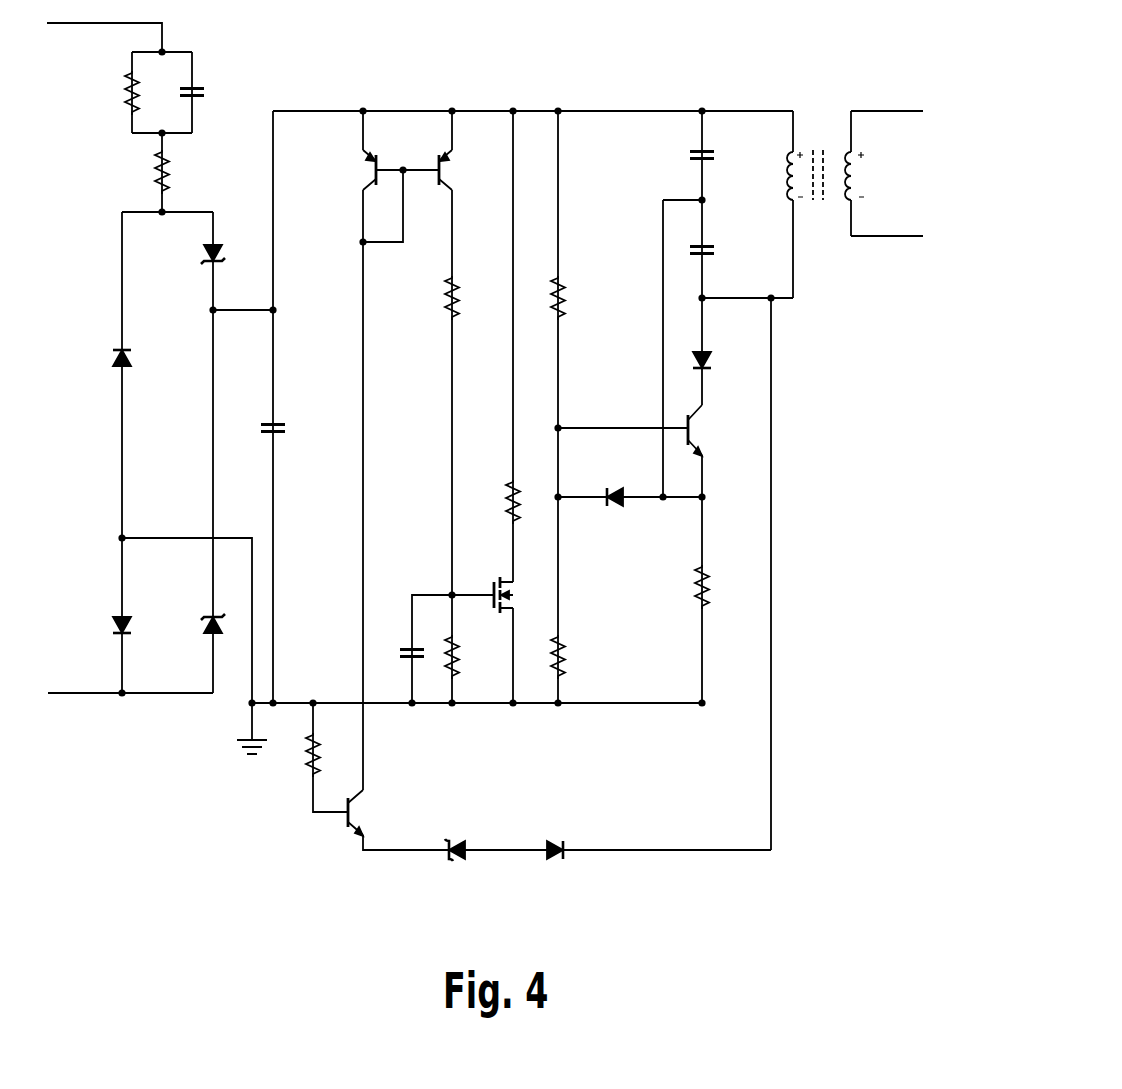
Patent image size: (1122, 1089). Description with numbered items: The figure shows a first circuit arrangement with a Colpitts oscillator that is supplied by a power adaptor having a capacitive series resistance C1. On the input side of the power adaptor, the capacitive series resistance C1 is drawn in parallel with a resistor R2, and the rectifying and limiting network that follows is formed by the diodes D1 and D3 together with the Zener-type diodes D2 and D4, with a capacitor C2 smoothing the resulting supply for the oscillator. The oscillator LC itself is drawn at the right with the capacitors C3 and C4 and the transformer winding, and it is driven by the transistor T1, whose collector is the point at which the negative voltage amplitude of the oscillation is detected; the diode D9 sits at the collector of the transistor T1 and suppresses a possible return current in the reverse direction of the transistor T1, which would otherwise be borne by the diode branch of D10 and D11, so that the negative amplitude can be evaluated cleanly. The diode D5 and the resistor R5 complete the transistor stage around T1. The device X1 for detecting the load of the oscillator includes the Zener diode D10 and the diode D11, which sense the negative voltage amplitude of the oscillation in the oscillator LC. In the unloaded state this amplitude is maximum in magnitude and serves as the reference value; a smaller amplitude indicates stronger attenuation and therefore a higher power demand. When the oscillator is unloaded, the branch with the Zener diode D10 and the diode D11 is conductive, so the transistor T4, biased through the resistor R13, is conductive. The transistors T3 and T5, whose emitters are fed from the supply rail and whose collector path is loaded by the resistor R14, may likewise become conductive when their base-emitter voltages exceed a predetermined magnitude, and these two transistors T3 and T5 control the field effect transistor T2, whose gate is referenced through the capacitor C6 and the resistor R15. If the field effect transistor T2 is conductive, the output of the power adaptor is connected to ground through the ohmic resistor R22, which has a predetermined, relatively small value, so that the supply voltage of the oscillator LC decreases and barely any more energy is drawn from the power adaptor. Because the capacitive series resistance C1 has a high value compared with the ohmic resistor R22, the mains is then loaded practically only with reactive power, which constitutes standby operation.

The resistor R2 is at (111, 93).
The capacitive series resistance C1 is at (208, 77).
The zener diode D4 is at (194, 255).
The diode D3 is at (104, 358).
The diode D1 is at (103, 625).
The zener diode D2 is at (195, 625).
The capacitor C2 is at (293, 430).
The resistor R13 is at (306, 757).
The transistor T4 is at (371, 813).
The transistor T5 is at (353, 170).
The transistor T3 is at (462, 170).
The resistor R14 is at (426, 298).
The ohmic resistor R22 is at (489, 502).
The field effect transistor T2 is at (499, 595).
The capacitor C6 is at (414, 649).
The resistor R15 is at (477, 657).
The capacitor C3 is at (719, 156).
The capacitor C4 is at (719, 250).
The oscillator LC is at (822, 110).
The diode D9 is at (722, 361).
The transistor T1 is at (714, 430).
The diode D5 is at (616, 517).
The resistor R5 is at (720, 587).
The device for detecting the load of the oscillator X1 is at (504, 829).
The Zener diode D10 is at (454, 871).
The diode D11 is at (554, 872).